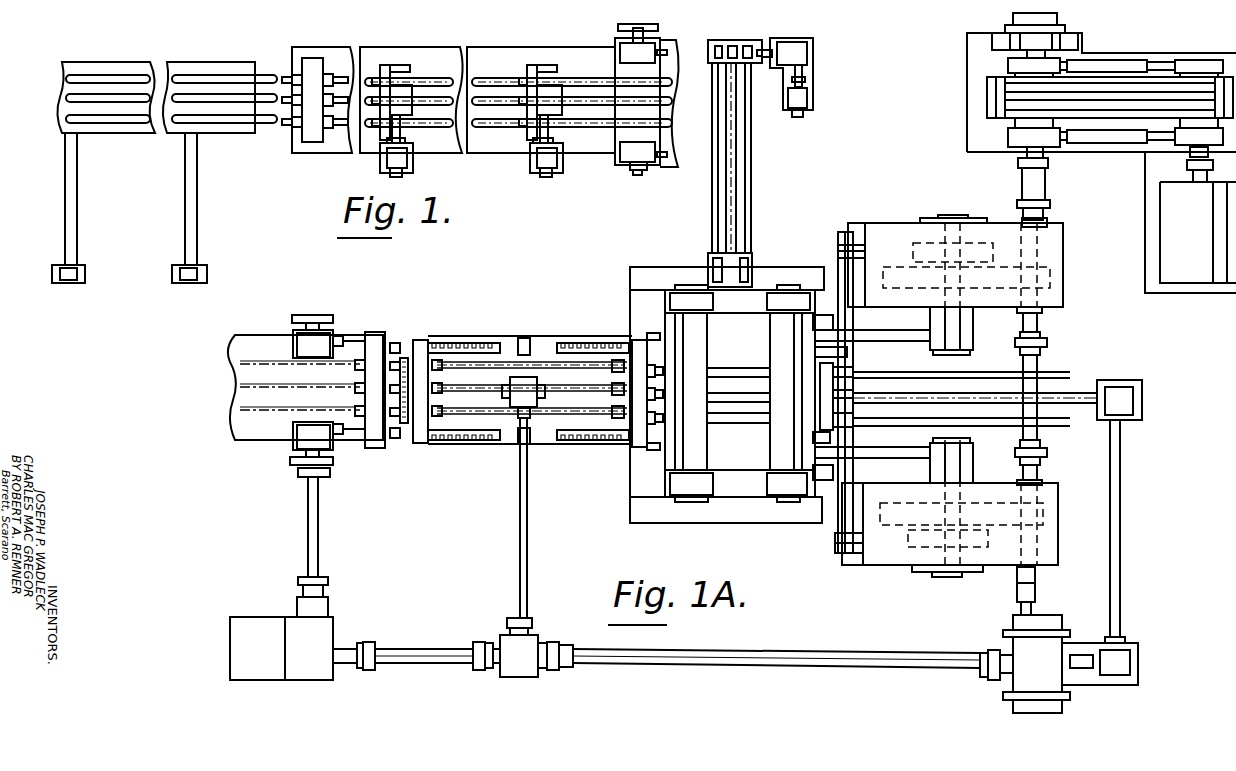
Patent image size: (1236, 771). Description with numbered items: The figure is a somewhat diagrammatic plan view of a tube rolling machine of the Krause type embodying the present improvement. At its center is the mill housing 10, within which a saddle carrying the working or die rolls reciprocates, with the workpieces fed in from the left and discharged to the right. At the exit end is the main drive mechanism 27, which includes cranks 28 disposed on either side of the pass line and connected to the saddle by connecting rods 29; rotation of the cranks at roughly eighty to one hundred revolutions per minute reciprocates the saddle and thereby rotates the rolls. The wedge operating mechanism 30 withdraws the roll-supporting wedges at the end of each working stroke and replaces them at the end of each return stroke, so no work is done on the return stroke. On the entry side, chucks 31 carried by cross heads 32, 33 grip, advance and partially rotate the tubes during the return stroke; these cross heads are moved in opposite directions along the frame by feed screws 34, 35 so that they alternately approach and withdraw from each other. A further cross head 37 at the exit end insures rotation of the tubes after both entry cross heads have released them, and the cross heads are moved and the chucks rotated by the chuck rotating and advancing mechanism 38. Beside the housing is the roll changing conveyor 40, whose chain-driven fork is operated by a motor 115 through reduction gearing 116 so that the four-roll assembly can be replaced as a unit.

The mill housing 10 is at (751, 285).
The main drive mechanism 27 is at (949, 214).
The cranks 28 is at (972, 326).
The connecting rods 29 is at (892, 335).
The wedge operating mechanism 30 is at (838, 252).
The chucks 31 is at (440, 370).
The cross head 32 is at (637, 440).
The cross head 33 is at (420, 440).
The feed screw 34 is at (590, 343).
The feed screw 35 is at (450, 343).
The cross head 37 is at (820, 383).
The chuck rotating and advancing mechanism 38 is at (688, 666).
The roll changing conveyor 40 is at (752, 221).
The motor 115 is at (807, 98).
The reduction gearing 116 is at (798, 47).